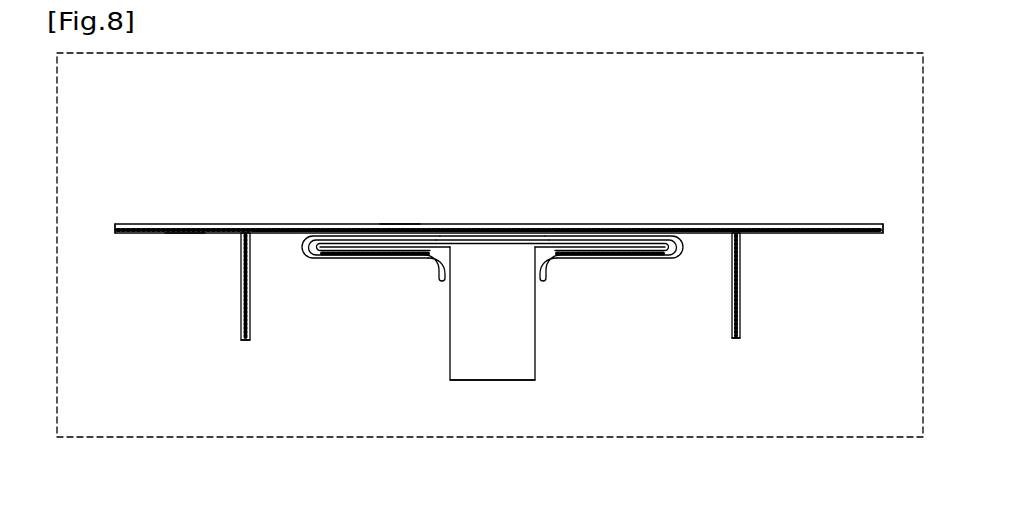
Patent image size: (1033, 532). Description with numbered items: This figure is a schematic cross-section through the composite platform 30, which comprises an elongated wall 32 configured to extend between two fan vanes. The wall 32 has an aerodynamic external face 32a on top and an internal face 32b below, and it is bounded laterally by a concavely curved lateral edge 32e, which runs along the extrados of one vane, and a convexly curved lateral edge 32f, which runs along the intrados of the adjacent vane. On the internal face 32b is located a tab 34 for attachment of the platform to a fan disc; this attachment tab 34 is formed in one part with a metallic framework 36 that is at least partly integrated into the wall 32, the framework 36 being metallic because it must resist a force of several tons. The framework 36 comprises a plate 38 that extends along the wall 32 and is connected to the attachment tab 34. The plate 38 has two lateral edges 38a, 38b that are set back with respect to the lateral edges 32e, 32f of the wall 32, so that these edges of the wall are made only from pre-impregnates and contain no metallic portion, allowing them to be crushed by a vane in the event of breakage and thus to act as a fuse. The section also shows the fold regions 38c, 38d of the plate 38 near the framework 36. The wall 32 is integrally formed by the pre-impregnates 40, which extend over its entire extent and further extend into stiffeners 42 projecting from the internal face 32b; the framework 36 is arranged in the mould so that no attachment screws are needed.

The composite platform 30 is at (776, 175).
The elongated wall 32 is at (243, 213).
The aerodynamic external face 32a is at (398, 225).
The internal face 32b is at (185, 236).
The concavely curved lateral edge 32e is at (114, 228).
The convexly curved lateral edge 32f is at (884, 228).
The attachment tab 34 is at (463, 383).
The metallic framework 36 is at (539, 400).
The plate 38 is at (591, 236).
The lateral edge of plate 38a is at (333, 238).
The lateral edge of plate 38b is at (670, 238).
The hooked fold end 38c is at (420, 259).
The inner fold layer 38d is at (457, 264).
The pre-impregnates 40 is at (276, 237).
The stiffeners 42 is at (255, 353).